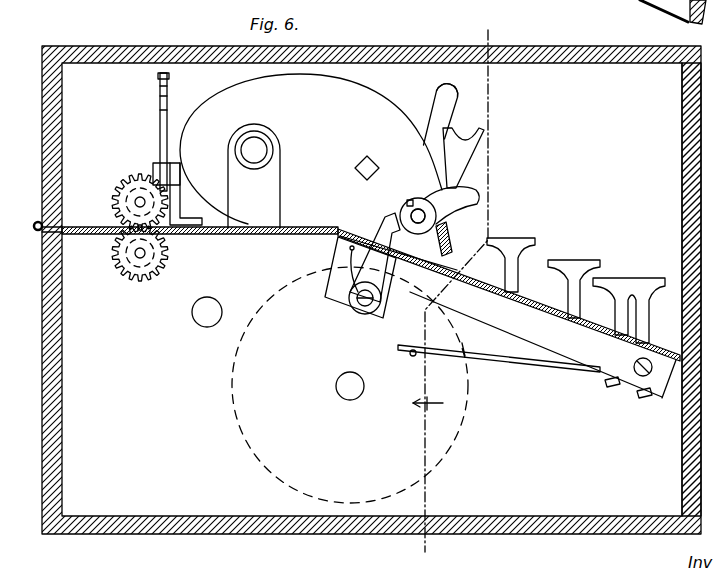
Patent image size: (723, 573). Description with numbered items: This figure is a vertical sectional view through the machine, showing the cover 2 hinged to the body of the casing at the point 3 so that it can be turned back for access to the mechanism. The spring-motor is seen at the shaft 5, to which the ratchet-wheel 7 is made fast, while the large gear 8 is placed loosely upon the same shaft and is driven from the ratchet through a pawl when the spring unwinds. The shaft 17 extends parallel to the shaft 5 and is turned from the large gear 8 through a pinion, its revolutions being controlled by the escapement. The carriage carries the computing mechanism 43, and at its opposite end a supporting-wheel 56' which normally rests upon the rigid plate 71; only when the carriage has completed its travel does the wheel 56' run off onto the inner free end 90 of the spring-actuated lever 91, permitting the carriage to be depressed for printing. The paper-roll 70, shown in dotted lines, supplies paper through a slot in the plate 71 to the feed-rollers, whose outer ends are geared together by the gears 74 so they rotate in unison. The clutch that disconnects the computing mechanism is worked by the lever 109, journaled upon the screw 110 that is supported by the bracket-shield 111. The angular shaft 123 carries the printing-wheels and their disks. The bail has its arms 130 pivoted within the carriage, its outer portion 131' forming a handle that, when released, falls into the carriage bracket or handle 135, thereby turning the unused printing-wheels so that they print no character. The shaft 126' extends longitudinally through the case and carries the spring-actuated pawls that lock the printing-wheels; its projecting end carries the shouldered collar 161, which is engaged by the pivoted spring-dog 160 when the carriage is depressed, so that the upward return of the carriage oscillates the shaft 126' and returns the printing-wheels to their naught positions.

The cover 2 is at (630, 66).
The hinge point 3 is at (36, 223).
The shaft 5 is at (350, 395).
The ratchet-wheel 7 is at (690, 432).
The large gear 8 is at (453, 292).
The shaft 17 is at (212, 308).
The computing mechanism 43 is at (263, 152).
The supporting-wheel 56' is at (567, 278).
The paper-roll 70 is at (233, 395).
The plate 71 is at (208, 236).
The gears 74 is at (113, 196).
The free end of lever 90 is at (430, 262).
The spring-actuated lever 91 is at (509, 313).
The lever 109 is at (162, 80).
The screw 110 is at (157, 170).
The bracket-shield 111 is at (178, 188).
The shaft 123 is at (384, 161).
The shaft 126' is at (471, 193).
The bail arms 130 is at (430, 118).
The bail handle 131' is at (460, 80).
The carriage bracket or handle 135 is at (473, 140).
The spring-dog 160 is at (355, 266).
The shouldered collar 161 is at (412, 212).